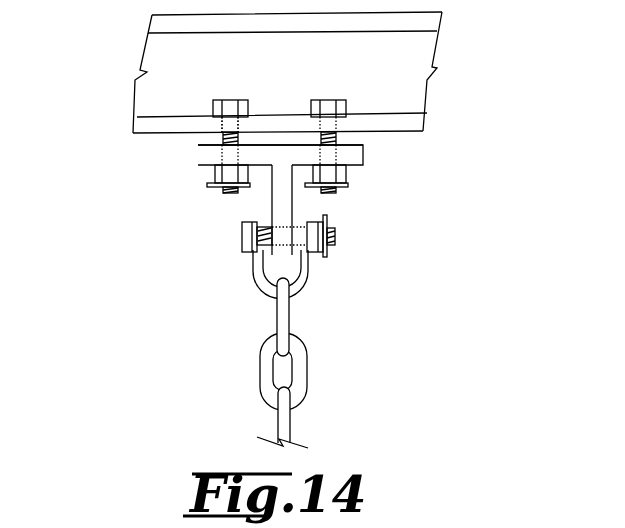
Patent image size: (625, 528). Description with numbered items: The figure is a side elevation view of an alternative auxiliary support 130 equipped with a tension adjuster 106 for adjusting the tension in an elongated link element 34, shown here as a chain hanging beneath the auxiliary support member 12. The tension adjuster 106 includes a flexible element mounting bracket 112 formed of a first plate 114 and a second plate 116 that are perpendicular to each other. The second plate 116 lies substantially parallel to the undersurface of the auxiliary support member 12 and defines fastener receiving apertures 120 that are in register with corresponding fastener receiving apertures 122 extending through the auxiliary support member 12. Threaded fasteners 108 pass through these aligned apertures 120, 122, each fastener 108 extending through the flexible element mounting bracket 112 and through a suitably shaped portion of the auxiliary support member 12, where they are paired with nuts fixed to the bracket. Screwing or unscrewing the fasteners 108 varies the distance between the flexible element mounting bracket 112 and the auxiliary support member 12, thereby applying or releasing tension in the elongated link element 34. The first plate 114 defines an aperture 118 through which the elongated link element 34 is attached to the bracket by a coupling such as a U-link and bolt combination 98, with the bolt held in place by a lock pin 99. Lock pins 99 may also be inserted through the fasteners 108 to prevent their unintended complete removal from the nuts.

The auxiliary support member 12 is at (275, 63).
The elongated link element 34 is at (260, 350).
The U-link and bolt combination 98 is at (300, 290).
The lock pin 99 is at (210, 183).
The tension adjuster 106 is at (339, 141).
The fastener 108 is at (228, 103).
The flexible element mounting bracket 112 is at (195, 155).
The first plate 114 is at (285, 153).
The second plate 116 is at (271, 209).
The aperture 118 is at (252, 258).
The fastener receiving aperture 120 is at (183, 170).
The fastener receiving aperture 122 is at (220, 121).
The auxiliary support 130 is at (150, 343).